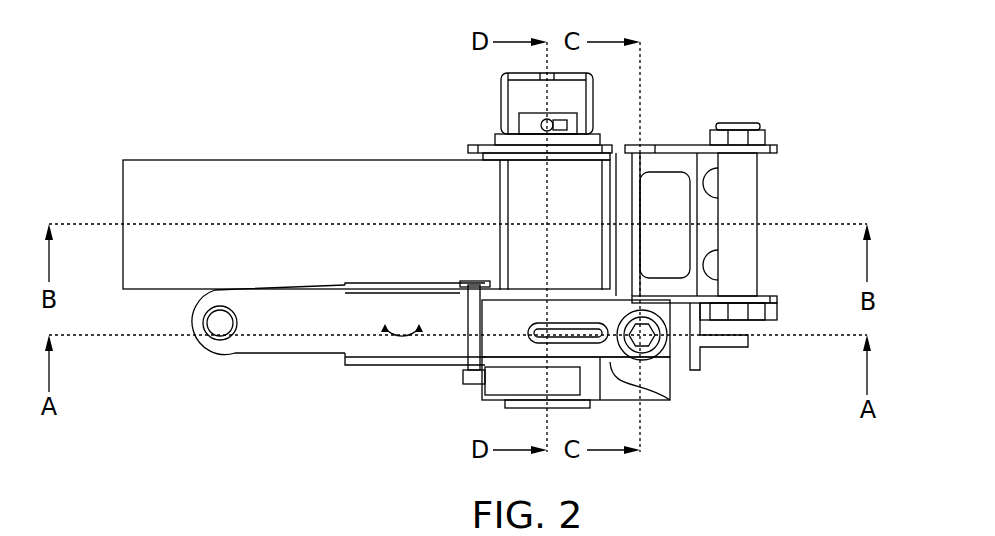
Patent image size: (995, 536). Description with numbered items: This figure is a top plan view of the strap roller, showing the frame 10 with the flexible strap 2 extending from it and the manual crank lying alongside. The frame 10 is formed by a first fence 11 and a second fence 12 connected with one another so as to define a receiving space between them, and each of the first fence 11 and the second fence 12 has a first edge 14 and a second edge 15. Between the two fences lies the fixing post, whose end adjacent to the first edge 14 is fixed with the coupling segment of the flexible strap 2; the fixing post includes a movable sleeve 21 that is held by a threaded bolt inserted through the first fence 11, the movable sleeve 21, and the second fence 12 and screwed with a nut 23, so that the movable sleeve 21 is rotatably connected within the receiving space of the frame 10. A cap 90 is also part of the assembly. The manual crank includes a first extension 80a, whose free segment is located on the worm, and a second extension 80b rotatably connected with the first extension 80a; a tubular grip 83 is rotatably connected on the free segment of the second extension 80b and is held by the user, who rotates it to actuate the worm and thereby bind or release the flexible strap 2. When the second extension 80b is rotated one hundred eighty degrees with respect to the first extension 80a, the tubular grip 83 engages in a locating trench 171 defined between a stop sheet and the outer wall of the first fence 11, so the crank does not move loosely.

The flexible strap 2 is at (262, 154).
The frame 10 is at (795, 146).
The first fence 11 is at (738, 296).
The second fence 12 is at (680, 150).
The first edge 14 is at (777, 147).
The second edge 15 is at (468, 150).
The movable sleeve 21 is at (747, 195).
The nut 23 is at (730, 134).
The first extension 80a is at (622, 364).
The second extension 80b is at (263, 355).
The tubular grip 83 is at (218, 342).
The cap 90 is at (470, 398).
The locating trench 171 is at (748, 350).